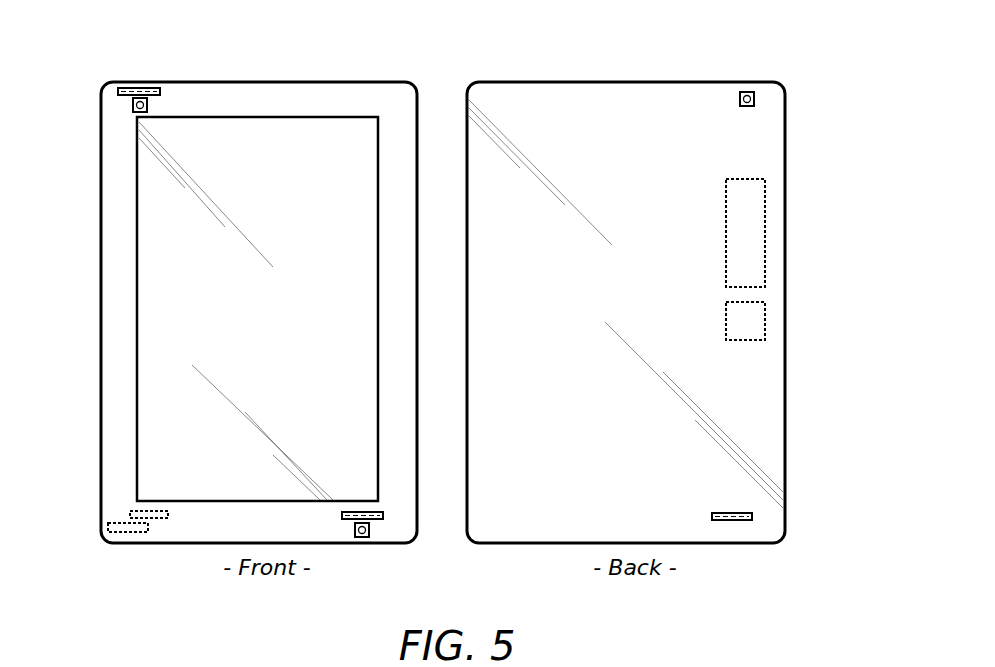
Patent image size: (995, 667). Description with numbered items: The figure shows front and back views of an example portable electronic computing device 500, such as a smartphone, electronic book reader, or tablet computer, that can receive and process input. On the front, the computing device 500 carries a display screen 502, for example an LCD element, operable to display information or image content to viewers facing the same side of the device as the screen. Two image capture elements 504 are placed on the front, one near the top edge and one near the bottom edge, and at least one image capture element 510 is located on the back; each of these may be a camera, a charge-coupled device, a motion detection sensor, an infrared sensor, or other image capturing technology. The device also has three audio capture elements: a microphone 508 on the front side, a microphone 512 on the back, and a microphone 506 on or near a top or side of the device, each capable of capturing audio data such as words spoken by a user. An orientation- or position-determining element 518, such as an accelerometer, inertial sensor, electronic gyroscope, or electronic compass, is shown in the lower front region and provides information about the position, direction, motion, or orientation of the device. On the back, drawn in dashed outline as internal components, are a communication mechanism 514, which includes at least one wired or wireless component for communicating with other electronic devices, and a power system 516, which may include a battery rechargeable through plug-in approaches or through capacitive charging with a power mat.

The electronic computing device 500 is at (812, 92).
The display screen 502 is at (137, 228).
The image capture element 504 is at (133, 104).
The microphone 506 is at (148, 88).
The microphone 508 is at (380, 520).
The image capture element 510 is at (740, 95).
The microphone 512 is at (150, 519).
The communication mechanism 514 is at (765, 248).
The power system 516 is at (765, 322).
The orientation- or position-determining element 518 is at (127, 533).